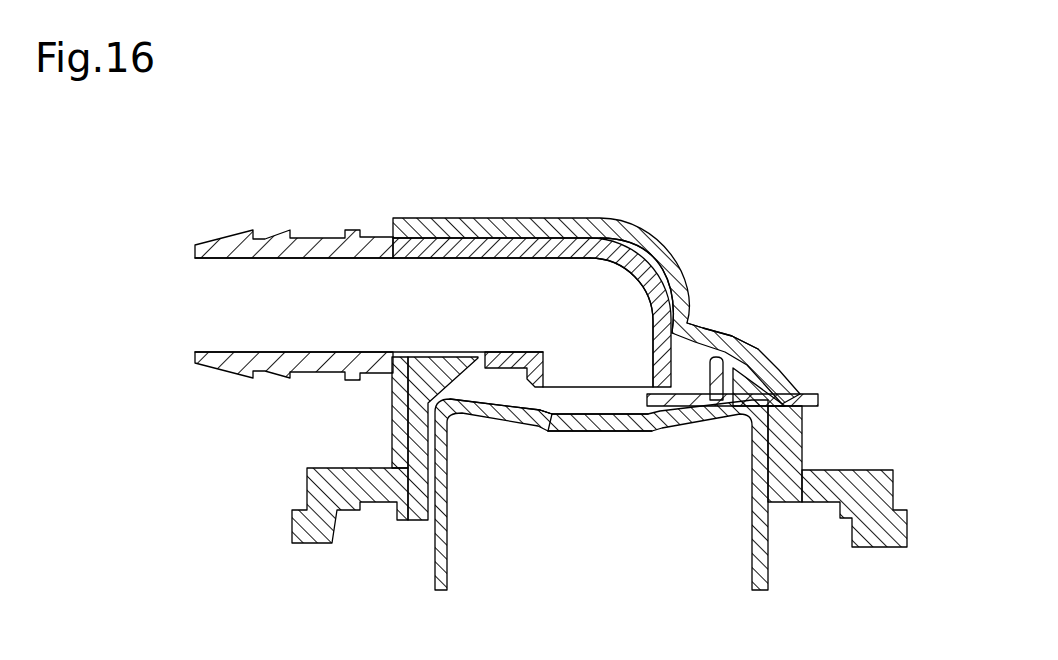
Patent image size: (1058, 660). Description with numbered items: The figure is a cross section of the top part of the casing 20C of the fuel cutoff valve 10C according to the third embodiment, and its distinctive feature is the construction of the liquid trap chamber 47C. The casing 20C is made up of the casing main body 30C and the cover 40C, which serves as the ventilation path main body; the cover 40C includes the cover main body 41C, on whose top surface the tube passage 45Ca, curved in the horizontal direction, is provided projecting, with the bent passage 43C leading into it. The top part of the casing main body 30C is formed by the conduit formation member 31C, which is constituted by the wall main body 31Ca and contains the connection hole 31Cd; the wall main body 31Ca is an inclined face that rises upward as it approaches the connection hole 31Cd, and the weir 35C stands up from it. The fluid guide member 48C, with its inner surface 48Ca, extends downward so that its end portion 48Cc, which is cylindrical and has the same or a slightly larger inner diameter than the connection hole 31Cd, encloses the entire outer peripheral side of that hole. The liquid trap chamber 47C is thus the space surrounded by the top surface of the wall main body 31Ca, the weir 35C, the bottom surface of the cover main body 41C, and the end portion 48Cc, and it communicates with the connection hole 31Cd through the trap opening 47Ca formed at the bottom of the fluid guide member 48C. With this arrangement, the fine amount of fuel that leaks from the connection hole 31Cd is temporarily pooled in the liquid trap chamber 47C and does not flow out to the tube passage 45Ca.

The fuel cutoff valve 10C is at (849, 172).
The casing 20C is at (153, 421).
The cover 40C is at (300, 376).
The casing main body 30C is at (433, 580).
The tube passage 45Ca is at (297, 291).
The weir 35C is at (477, 353).
The cover main body 41C is at (521, 352).
The bent passage 43C is at (587, 307).
The fluid guide member 48C is at (663, 277).
The inner surface of cover 48Ca is at (613, 254).
The end portion 48Cc is at (700, 325).
The liquid trap chamber 47C is at (683, 378).
The trap opening 47Ca is at (693, 407).
The conduit formation member 31C is at (500, 410).
The wall main body 31Ca is at (550, 412).
The connection hole 31Cd is at (627, 424).